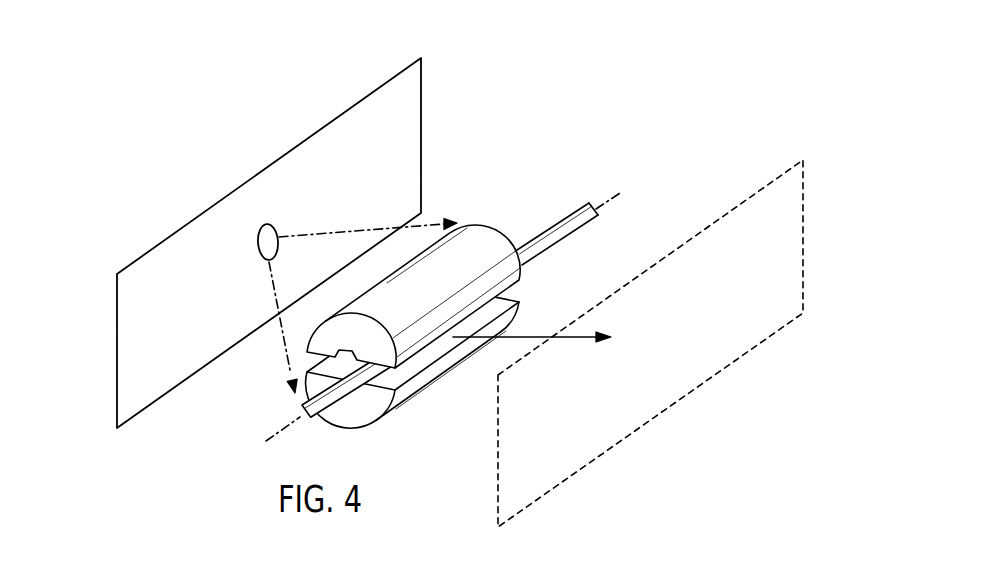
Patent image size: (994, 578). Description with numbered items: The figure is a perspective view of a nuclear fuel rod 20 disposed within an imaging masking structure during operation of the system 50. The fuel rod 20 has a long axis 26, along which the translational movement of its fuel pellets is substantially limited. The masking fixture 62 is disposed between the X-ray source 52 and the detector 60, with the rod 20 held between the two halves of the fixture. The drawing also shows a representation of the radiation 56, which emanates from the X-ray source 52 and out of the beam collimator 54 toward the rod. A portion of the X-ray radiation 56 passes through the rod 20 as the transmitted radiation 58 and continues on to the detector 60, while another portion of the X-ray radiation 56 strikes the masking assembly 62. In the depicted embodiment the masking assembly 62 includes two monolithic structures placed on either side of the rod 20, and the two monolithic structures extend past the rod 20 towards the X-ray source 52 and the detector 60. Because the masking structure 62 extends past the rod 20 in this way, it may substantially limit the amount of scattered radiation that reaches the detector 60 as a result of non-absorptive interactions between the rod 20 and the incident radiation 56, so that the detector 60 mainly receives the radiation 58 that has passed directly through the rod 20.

The fuel rod 20 is at (535, 258).
The long axis 26 is at (619, 190).
The system 50 is at (600, 72).
The X-ray source 52 is at (423, 98).
The beam collimator 54 is at (265, 253).
The radiation 56 is at (430, 224).
The radiation 58 is at (566, 340).
The detector 60 is at (805, 192).
The masking fixture 62 is at (450, 315).